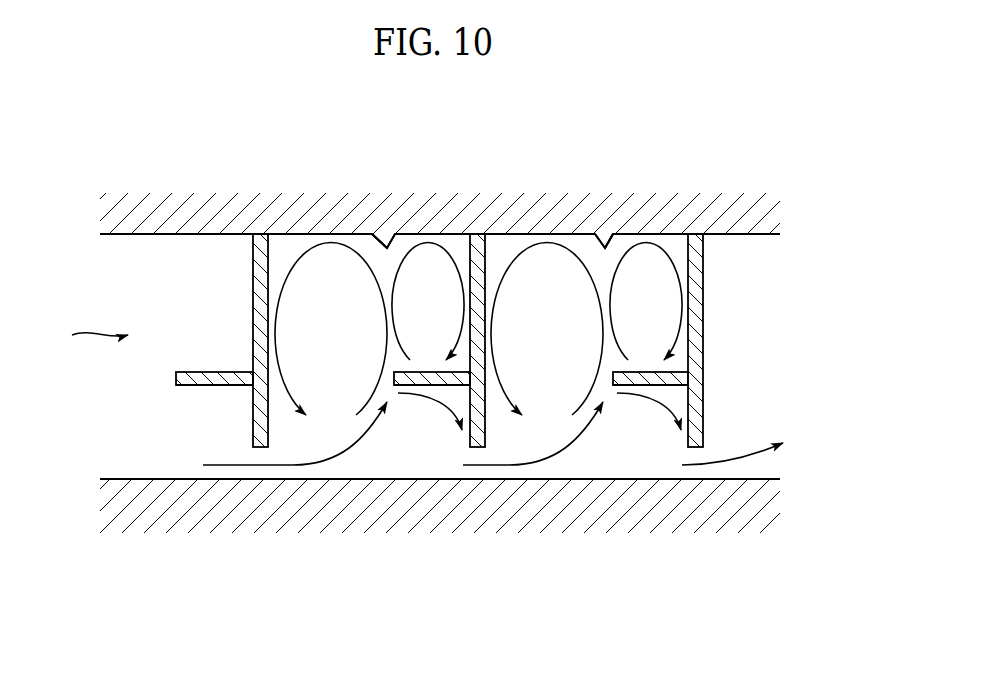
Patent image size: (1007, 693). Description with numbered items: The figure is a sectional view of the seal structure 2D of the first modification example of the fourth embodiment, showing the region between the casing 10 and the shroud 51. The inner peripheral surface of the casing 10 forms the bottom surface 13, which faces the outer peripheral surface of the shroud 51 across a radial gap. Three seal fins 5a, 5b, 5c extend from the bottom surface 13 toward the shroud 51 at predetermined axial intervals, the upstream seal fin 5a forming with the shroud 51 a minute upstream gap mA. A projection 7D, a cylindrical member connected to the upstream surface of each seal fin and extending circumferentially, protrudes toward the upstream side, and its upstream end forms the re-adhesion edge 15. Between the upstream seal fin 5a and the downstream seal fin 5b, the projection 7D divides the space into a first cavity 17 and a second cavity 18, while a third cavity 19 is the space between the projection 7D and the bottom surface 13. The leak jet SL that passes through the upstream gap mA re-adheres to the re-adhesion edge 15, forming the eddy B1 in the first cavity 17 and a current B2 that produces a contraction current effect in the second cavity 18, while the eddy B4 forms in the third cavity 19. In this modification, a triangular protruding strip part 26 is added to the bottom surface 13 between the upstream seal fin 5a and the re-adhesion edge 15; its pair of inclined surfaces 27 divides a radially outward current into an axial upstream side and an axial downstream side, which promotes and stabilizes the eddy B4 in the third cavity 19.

The casing 10 is at (122, 233).
The bottom surface 13 is at (174, 236).
The triangular protruding strip part 26 is at (386, 245).
The inclined surfaces 27 is at (371, 236).
The third cavity 19 is at (440, 265).
The first cavity 17 is at (323, 268).
The upstream seal fin 5a is at (263, 258).
The downstream seal fin 5b is at (480, 258).
The seal fin 5c is at (697, 290).
The projection 7D is at (200, 371).
The re-adhesion edge 15 is at (177, 387).
The shroud 51 is at (117, 492).
The seal structure 2D is at (85, 332).
The upstream gap mA is at (252, 474).
The leak jet SL is at (300, 465).
The second cavity 18 is at (435, 430).
The eddy B1 is at (282, 290).
The eddy B4 is at (397, 280).
The current B2 is at (466, 413).